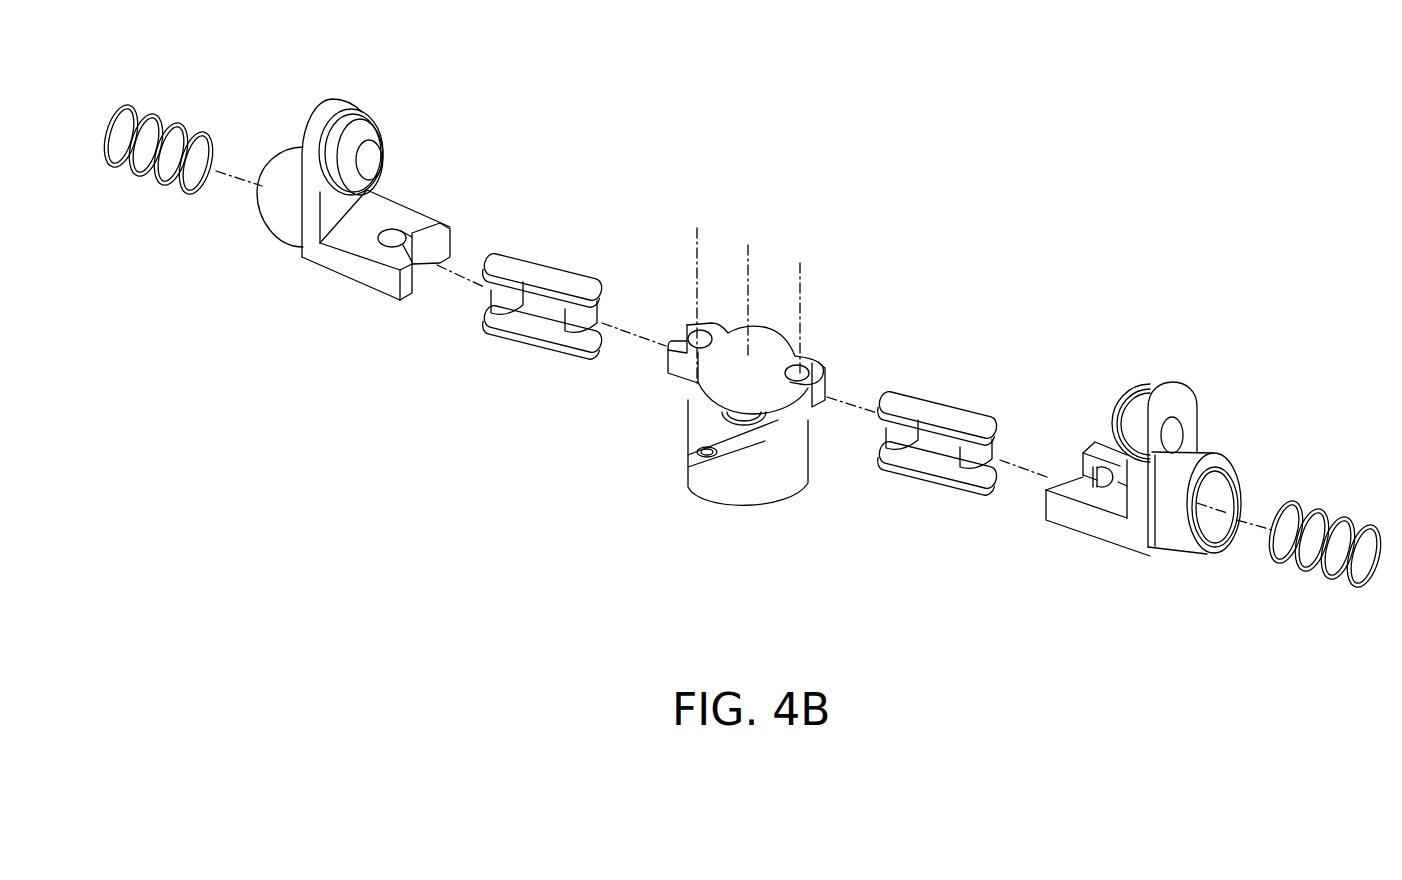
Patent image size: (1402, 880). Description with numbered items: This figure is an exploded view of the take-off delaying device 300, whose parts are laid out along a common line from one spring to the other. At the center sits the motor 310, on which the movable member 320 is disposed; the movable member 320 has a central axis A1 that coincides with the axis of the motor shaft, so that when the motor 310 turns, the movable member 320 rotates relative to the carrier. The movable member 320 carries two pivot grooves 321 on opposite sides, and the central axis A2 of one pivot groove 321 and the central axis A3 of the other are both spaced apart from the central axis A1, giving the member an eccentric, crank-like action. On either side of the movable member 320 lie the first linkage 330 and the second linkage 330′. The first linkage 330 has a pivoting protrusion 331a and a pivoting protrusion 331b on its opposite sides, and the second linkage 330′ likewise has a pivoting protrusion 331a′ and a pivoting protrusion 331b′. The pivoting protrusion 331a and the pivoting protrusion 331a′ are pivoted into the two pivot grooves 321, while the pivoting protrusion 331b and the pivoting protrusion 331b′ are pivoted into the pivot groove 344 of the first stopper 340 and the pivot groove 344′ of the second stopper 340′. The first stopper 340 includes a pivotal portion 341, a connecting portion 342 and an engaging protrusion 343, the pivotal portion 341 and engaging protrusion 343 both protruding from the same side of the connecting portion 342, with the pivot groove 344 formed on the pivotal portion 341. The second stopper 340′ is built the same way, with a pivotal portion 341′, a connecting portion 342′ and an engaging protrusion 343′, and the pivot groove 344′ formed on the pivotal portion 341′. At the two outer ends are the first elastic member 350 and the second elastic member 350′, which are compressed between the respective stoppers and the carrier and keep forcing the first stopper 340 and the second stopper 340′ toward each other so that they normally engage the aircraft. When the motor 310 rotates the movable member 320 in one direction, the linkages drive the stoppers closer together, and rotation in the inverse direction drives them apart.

The take-off delaying device 300 is at (894, 169).
The motor 310 is at (720, 487).
The movable member 320 is at (727, 370).
The pivot grooves 321 is at (677, 331).
The first linkage 330 is at (945, 413).
The pivoting protrusion 331a is at (897, 437).
The pivoting protrusion 331b is at (973, 463).
The first stopper 340 is at (1212, 390).
The pivotal portion 341 is at (1089, 522).
The connecting portion 342 is at (1167, 387).
The engaging protrusion 343 is at (1117, 410).
The pivot groove 344 is at (1080, 466).
The first elastic member 350 is at (1340, 513).
The second linkage 330′ is at (545, 277).
The pivoting protrusion 331a′ is at (579, 323).
The pivoting protrusion 331b′ is at (502, 297).
The second stopper 340′ is at (297, 110).
The pivotal portion 341′ is at (347, 263).
The connecting portion 342′ is at (337, 108).
The engaging protrusion 343′ is at (375, 154).
The pivot groove 344′ is at (398, 230).
The second elastic member 350′ is at (165, 130).
The central axis A1 is at (749, 290).
The central axis A2 is at (697, 294).
The central axis A3 is at (799, 308).